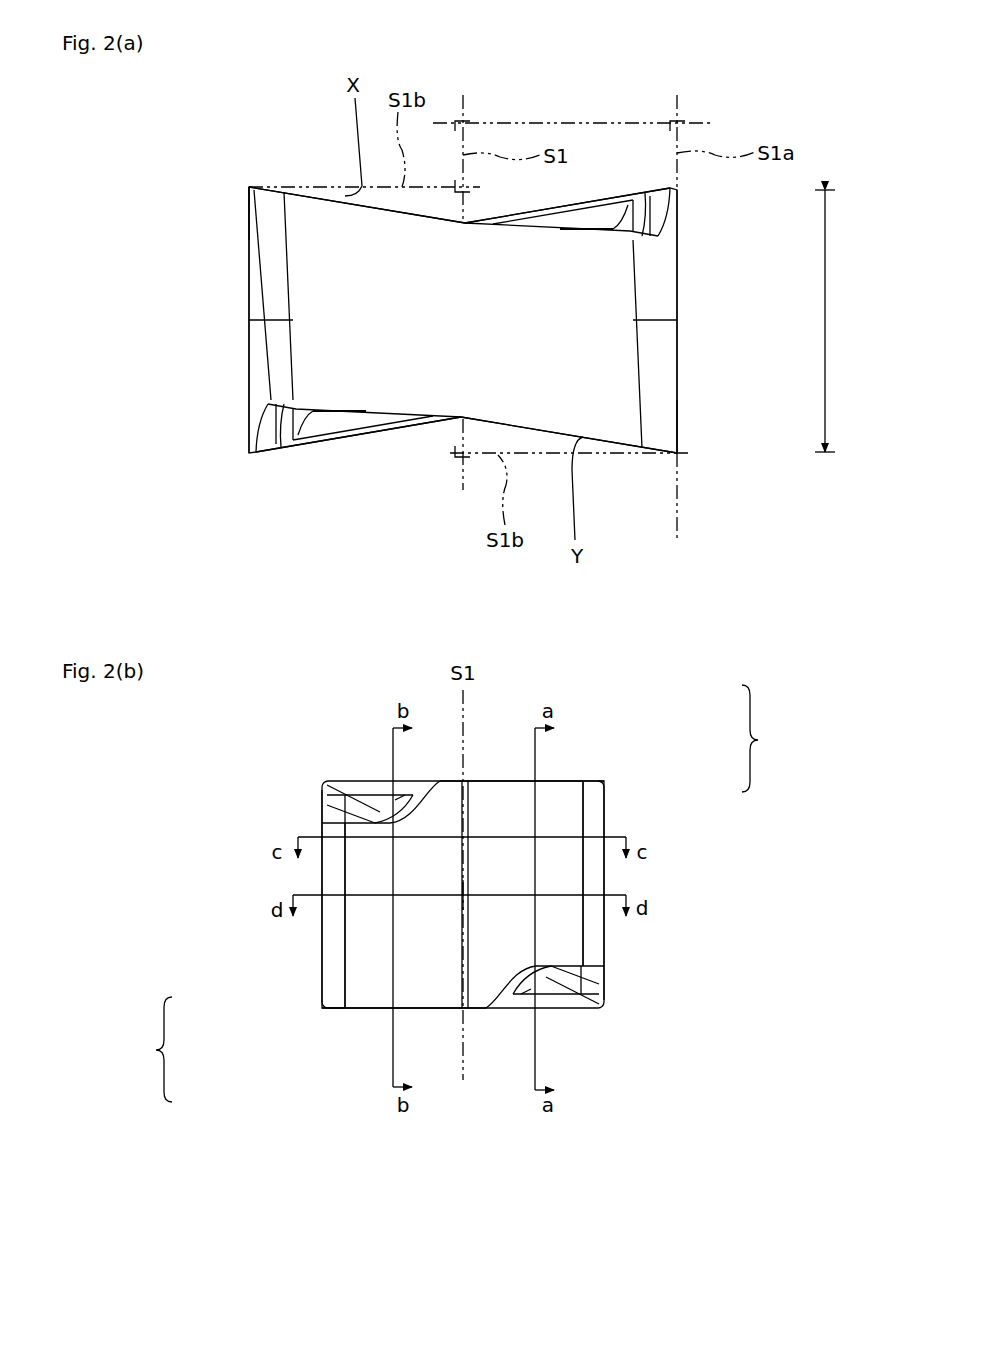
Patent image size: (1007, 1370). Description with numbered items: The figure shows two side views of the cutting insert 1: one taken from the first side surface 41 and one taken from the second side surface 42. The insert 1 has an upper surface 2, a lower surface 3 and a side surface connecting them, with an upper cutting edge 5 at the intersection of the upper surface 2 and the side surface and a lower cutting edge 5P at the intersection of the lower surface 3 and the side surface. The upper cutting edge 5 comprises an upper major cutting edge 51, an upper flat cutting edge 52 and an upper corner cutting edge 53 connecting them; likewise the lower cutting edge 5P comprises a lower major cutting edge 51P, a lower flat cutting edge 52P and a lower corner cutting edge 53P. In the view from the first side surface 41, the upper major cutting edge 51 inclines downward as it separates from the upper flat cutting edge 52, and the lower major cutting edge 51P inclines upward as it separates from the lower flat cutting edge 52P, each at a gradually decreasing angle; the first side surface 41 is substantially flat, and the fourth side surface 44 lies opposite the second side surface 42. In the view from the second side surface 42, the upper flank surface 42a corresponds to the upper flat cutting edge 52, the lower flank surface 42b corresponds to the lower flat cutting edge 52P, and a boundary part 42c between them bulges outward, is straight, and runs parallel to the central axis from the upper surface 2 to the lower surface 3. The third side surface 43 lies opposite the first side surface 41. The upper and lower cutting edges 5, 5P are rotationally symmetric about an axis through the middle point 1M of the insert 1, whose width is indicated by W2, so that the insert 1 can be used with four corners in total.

In FIG. 2A, the insert 1 is at (243, 458).
In FIG. 2B, the insert 1 is at (300, 776).
In FIG. 2B, the middle point 1M is at (468, 895).
In FIG. 2A, the upper surface 2 is at (611, 220).
In FIG. 2B, the upper surface 2 is at (357, 814).
In FIG. 2A, the lower surface 3 is at (317, 420).
In FIG. 2B, the lower surface 3 is at (571, 984).
In FIG. 2A, the first side surface 41 is at (385, 320).
In FIG. 2B, the first side surface 41 is at (605, 953).
In FIG. 2A, the second side surface 42 is at (249, 297).
In FIG. 2B, the second side surface 42 is at (455, 1194).
In FIG. 2B, the upper flank surface 42a is at (497, 870).
In FIG. 2B, the lower flank surface 42b is at (423, 912).
In FIG. 2B, the boundary part 42c is at (460, 880).
In FIG. 2B, the third side surface 43 is at (322, 952).
In FIG. 2A, the fourth side surface 44 is at (680, 355).
In FIG. 2B, the upper cutting edge 5 is at (759, 738).
In FIG. 2A, the upper major cutting edge 51 is at (305, 197).
In FIG. 2B, the upper major cutting edge 51 is at (605, 781).
In FIG. 2A, the upper flat cutting edge 52 is at (250, 186).
In FIG. 2B, the upper flat cutting edge 52 is at (568, 781).
In FIG. 2A, the upper corner cutting edge 53 is at (251, 186).
In FIG. 2B, the upper corner cutting edge 53 is at (596, 781).
In FIG. 2B, the lower cutting edge 5P is at (151, 1049).
In FIG. 2A, the lower major cutting edge 51P is at (613, 452).
In FIG. 2B, the lower major cutting edge 51P is at (322, 1008).
In FIG. 2A, the lower flat cutting edge 52P is at (682, 456).
In FIG. 2B, the lower flat cutting edge 52P is at (358, 1010).
In FIG. 2B, the lower corner cutting edge 53P is at (331, 1010).
In FIG. 2A, the width of cutting insert W2 is at (838, 321).